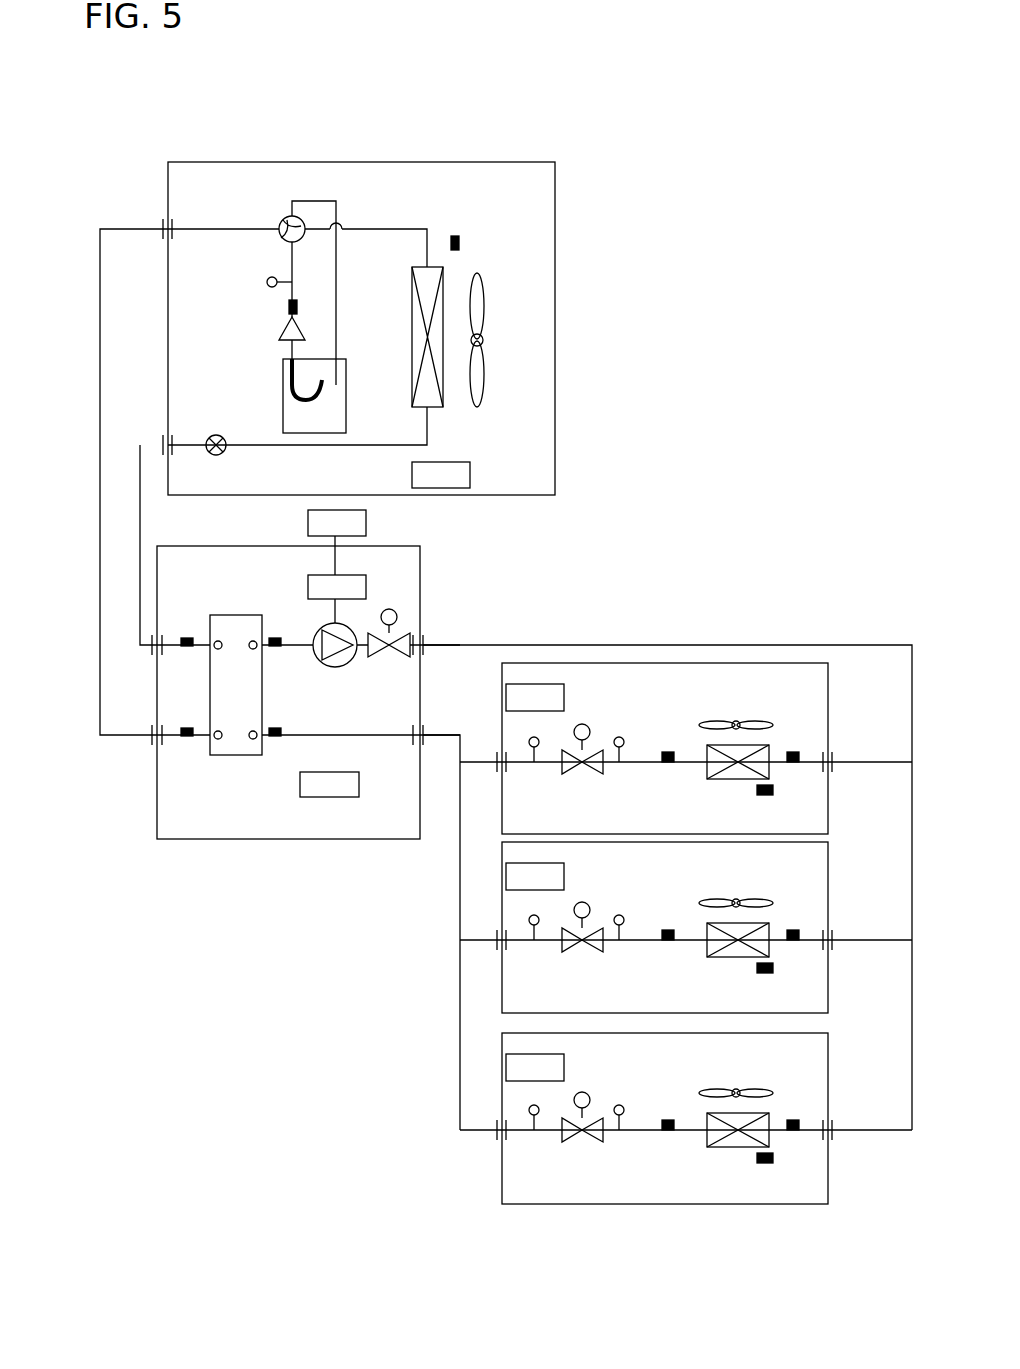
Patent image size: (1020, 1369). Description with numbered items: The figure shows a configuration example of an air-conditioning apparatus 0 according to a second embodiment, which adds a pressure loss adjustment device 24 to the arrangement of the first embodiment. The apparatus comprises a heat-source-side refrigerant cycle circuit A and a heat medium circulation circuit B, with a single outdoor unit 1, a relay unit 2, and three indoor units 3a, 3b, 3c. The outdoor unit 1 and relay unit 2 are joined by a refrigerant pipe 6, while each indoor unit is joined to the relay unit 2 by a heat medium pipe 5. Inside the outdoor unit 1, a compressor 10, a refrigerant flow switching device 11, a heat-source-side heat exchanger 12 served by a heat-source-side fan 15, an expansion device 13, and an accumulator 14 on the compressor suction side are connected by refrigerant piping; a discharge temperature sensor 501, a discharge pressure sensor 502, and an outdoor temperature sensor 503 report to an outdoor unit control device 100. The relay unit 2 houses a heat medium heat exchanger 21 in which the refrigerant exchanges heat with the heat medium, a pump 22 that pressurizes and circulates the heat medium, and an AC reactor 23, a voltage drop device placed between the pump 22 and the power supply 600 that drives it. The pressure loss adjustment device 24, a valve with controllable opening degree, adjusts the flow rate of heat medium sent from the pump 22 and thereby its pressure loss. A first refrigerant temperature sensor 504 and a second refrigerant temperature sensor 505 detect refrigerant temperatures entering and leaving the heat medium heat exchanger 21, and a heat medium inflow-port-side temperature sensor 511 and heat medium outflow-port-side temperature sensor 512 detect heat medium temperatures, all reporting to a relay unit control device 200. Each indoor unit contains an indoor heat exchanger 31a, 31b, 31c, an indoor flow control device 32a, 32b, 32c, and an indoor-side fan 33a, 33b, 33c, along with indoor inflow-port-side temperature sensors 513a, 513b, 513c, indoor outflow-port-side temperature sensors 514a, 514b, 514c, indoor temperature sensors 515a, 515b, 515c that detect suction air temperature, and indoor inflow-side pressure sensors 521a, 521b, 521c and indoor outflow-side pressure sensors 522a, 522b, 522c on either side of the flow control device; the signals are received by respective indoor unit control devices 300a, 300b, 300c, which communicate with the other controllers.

The air-conditioning apparatus 0 is at (739, 244).
The outdoor unit 1 is at (556, 282).
The relay unit 2 is at (224, 839).
The indoor unit 3a is at (828, 693).
The indoor unit 3b is at (828, 872).
The indoor unit 3c is at (828, 1063).
The heat medium pipe 5 is at (450, 649).
The refrigerant pipe 6 is at (104, 416).
The compressor 10 is at (296, 334).
The refrigerant flow switching device 11 is at (280, 217).
The heat-source-side heat exchanger 12 is at (412, 290).
The expansion device 13 is at (219, 436).
The accumulator 14 is at (346, 383).
The heat-source-side fan 15 is at (484, 310).
The heat medium heat exchanger 21 is at (224, 615).
The pump 22 is at (331, 667).
The AC reactor 23 is at (306, 584).
The pressure loss adjustment device 24 is at (392, 657).
The indoor heat exchanger 31a is at (710, 779).
The indoor heat exchanger 31b is at (710, 957).
The indoor heat exchanger 31c is at (710, 1147).
The indoor flow control device 32a is at (585, 774).
The indoor flow control device 32b is at (585, 952).
The indoor flow control device 32c is at (585, 1142).
The indoor-side fan 33a is at (724, 722).
The indoor-side fan 33b is at (724, 900).
The indoor-side fan 33c is at (724, 1090).
The outdoor unit control device 100 is at (446, 455).
The relay unit control device 200 is at (333, 797).
The indoor unit control device 300a is at (564, 685).
The indoor unit control device 300b is at (564, 864).
The indoor unit control device 300c is at (564, 1055).
The discharge temperature sensor 501 is at (289, 308).
The discharge pressure sensor 502 is at (267, 280).
The outdoor temperature sensor 503 is at (460, 243).
The first refrigerant temperature sensor 504 is at (188, 628).
The second refrigerant temperature sensor 505 is at (188, 722).
The heat medium inflow-port-side temperature sensor 511 is at (276, 726).
The heat medium outflow-port-side temperature sensor 512 is at (276, 636).
The indoor inflow-port-side temperature sensor 513a is at (794, 752).
The indoor inflow-port-side temperature sensor 513b is at (794, 930).
The indoor inflow-port-side temperature sensor 513c is at (794, 1120).
The indoor outflow-port-side temperature sensor 514a is at (668, 752).
The indoor outflow-port-side temperature sensor 514b is at (668, 930).
The indoor outflow-port-side temperature sensor 514c is at (668, 1120).
The indoor temperature sensor 515a is at (765, 795).
The indoor temperature sensor 515b is at (765, 973).
The indoor temperature sensor 515c is at (765, 1163).
The indoor inflow-side pressure sensor 521a is at (628, 727).
The indoor inflow-side pressure sensor 521b is at (628, 905).
The indoor inflow-side pressure sensor 521c is at (628, 1095).
The indoor outflow-side pressure sensor 522a is at (540, 733).
The indoor outflow-side pressure sensor 522b is at (540, 911).
The indoor outflow-side pressure sensor 522c is at (540, 1101).
The power supply 600 is at (366, 526).
The heat-source-side refrigerant cycle circuit A is at (150, 534).
The heat medium circulation circuit B is at (836, 632).